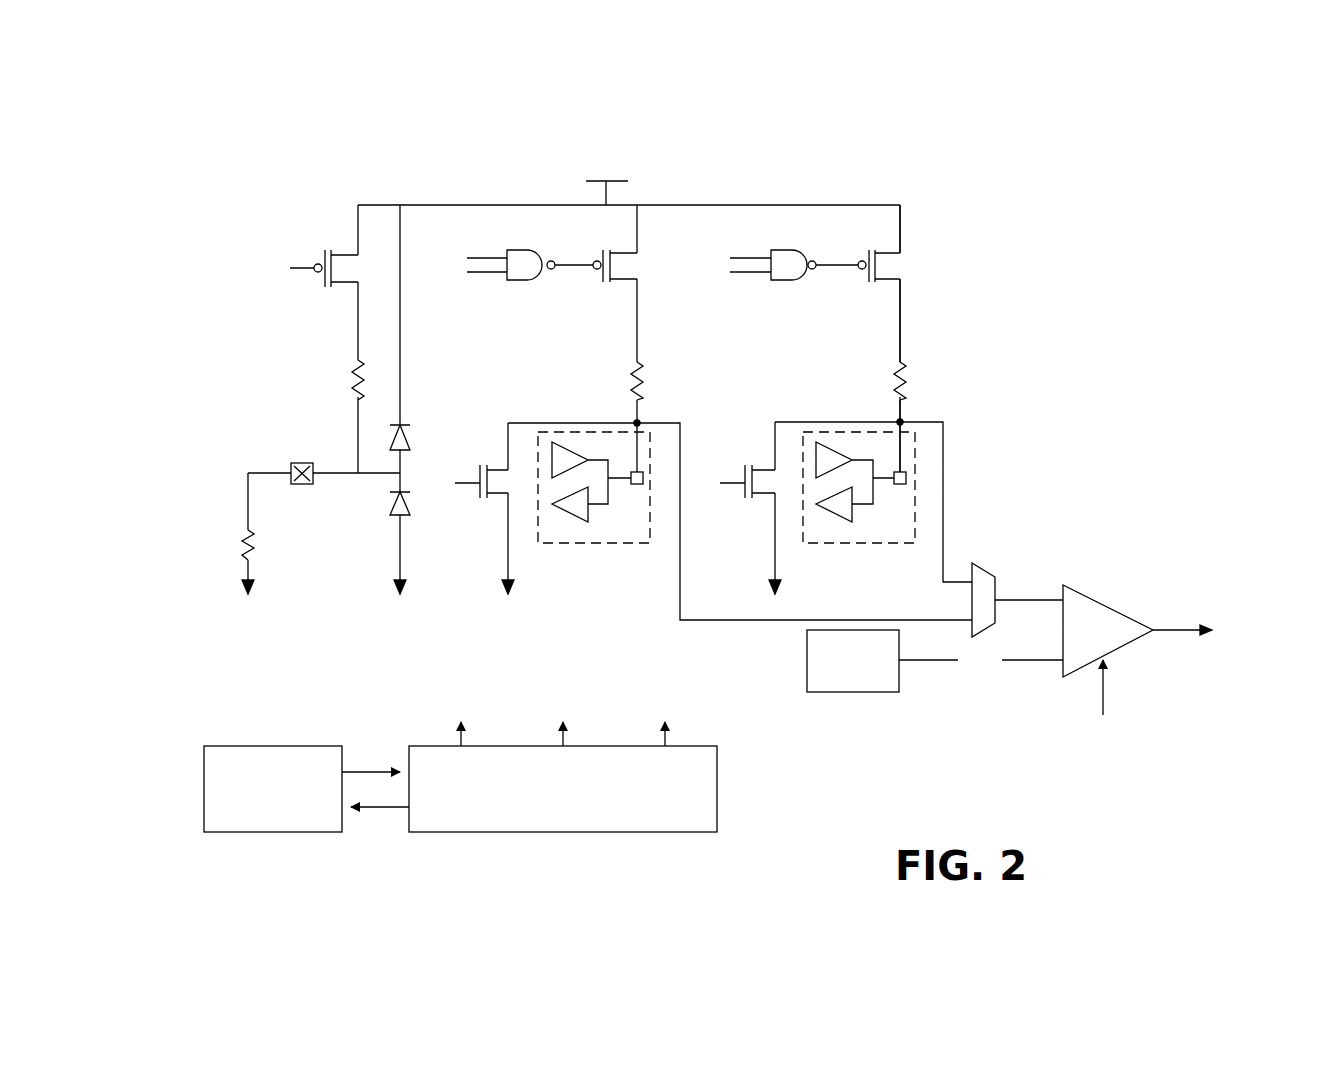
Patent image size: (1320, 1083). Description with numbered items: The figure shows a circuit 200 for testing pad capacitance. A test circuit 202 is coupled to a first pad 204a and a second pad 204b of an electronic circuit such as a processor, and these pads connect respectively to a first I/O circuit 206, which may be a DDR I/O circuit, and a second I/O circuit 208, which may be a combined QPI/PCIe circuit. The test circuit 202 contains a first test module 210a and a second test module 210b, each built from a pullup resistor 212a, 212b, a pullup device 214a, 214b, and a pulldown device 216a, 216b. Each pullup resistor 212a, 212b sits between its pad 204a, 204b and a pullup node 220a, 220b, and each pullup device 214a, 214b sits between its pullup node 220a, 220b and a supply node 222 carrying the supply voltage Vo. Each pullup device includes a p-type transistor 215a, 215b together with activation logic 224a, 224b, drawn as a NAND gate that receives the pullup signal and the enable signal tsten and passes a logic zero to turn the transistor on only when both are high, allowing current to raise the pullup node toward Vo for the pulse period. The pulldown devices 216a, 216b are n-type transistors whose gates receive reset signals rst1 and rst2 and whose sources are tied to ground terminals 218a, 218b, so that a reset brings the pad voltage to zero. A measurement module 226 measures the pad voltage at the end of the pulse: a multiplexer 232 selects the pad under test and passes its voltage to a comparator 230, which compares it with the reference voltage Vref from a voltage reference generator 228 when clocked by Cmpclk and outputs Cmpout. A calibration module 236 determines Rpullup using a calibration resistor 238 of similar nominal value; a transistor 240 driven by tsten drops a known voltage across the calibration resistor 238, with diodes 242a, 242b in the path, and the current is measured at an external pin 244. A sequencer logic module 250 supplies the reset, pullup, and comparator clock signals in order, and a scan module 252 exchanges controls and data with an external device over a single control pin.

The circuit 200 is at (1197, 183).
The test circuit 202 is at (993, 197).
The first pad 204a is at (634, 486).
The second pad 204b is at (906, 478).
The first I/O circuit 206 is at (566, 489).
The second I/O circuit 208 is at (923, 479).
The first test module 210a is at (565, 239).
The second test module 210b is at (843, 234).
The first pullup resistor 212a is at (634, 380).
The second pullup resistor 212b is at (896, 376).
The first pullup device 214a is at (580, 240).
The second pullup device 214b is at (850, 222).
The first pullup transistor 215a is at (606, 290).
The second pullup transistor 215b is at (882, 235).
The first pulldown device 216a is at (490, 468).
The second pulldown device 216b is at (756, 468).
The first ground terminal 218a is at (504, 588).
The second ground terminal 218b is at (778, 590).
The first pullup node 220a is at (640, 305).
The second pullup node 220b is at (902, 303).
The supply node 222 is at (628, 181).
The first activation logic 224a is at (510, 262).
The second activation logic 224b is at (778, 260).
The measurement module 226 is at (1021, 606).
The voltage reference generator 228 is at (852, 692).
The comparator 230 is at (1076, 660).
The multiplexer 232 is at (984, 597).
The calibration module 236 is at (298, 285).
The calibration resistor 238 is at (350, 362).
The switch transistor 240 is at (333, 255).
The first diode 242a is at (402, 430).
The second diode 242b is at (398, 518).
The external pin 244 is at (291, 468).
The sequencer logic module 250 is at (529, 758).
The scan module 252 is at (256, 746).